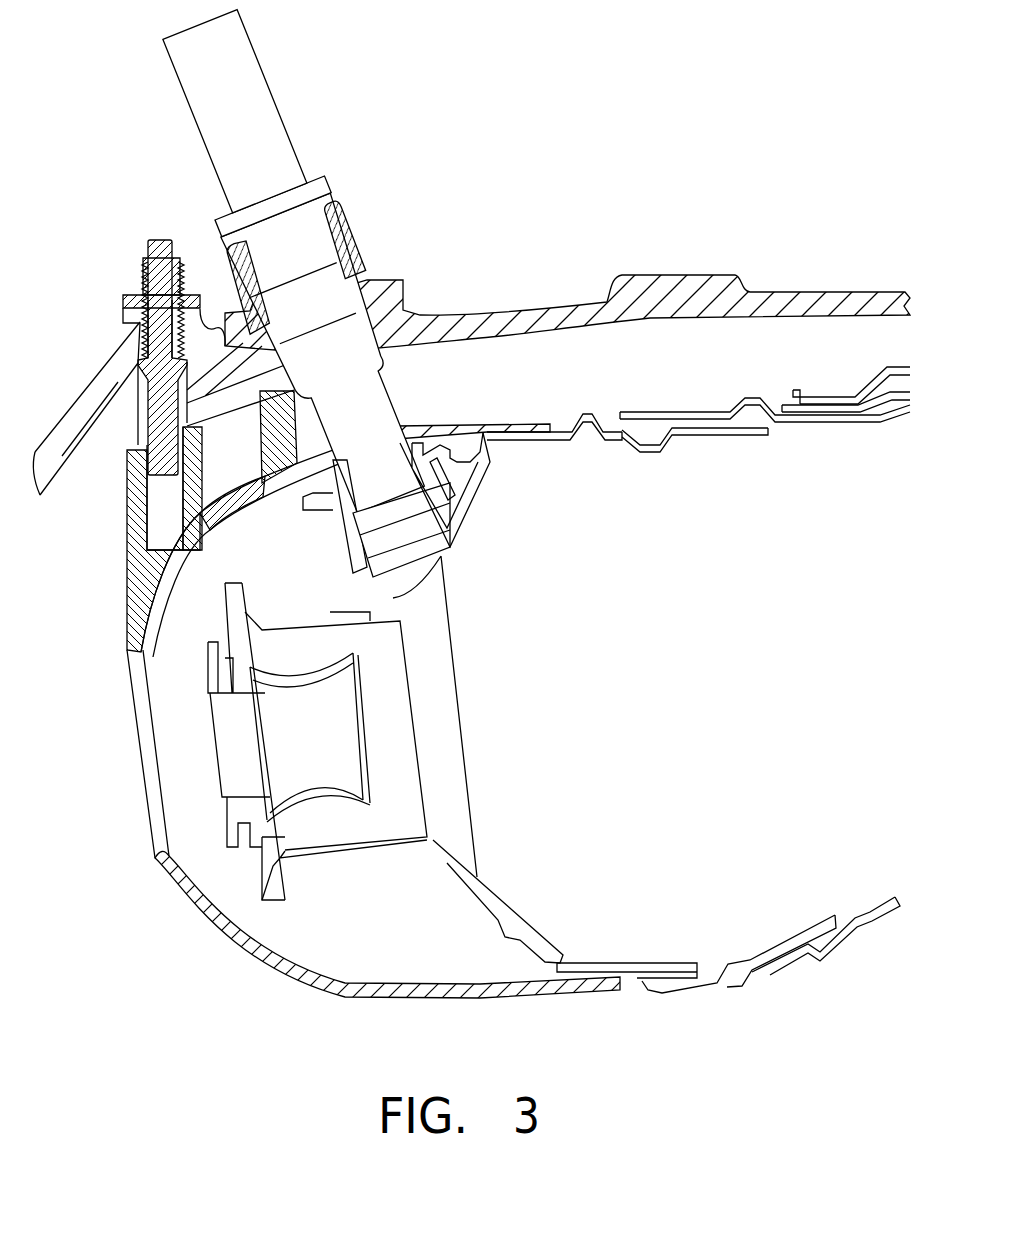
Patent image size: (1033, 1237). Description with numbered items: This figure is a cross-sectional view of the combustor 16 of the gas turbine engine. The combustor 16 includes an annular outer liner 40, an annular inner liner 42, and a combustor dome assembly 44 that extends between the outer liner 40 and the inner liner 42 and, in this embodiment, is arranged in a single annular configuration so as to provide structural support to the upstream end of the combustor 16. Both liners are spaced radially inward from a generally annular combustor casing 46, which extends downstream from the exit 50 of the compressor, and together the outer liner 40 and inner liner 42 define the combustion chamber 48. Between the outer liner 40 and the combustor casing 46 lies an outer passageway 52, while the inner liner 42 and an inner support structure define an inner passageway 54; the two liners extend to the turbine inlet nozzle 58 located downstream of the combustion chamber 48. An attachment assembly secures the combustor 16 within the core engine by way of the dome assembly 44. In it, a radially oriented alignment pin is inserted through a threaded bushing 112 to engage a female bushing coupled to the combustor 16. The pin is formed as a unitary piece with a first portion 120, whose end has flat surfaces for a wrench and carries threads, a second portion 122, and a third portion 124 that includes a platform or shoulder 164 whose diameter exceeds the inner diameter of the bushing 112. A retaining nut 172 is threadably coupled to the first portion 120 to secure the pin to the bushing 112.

The combustor 16 is at (561, 155).
The annular outer liner 40 is at (707, 430).
The annular inner liner 42 is at (760, 948).
The combustor dome assembly 44 is at (340, 988).
The combustor casing 46 is at (690, 282).
The combustion chamber 48 is at (683, 705).
The compressor exit 50 is at (104, 803).
The outer passageway 52 is at (691, 365).
The inner passageway 54 is at (692, 1048).
The turbine inlet nozzle 58 is at (897, 685).
The threaded bushing 112 is at (130, 298).
The first portion 120 is at (153, 237).
The second portion 122 is at (163, 323).
The third portion 124 is at (149, 437).
The shoulder 164 is at (146, 372).
The retaining nut 172 is at (143, 270).